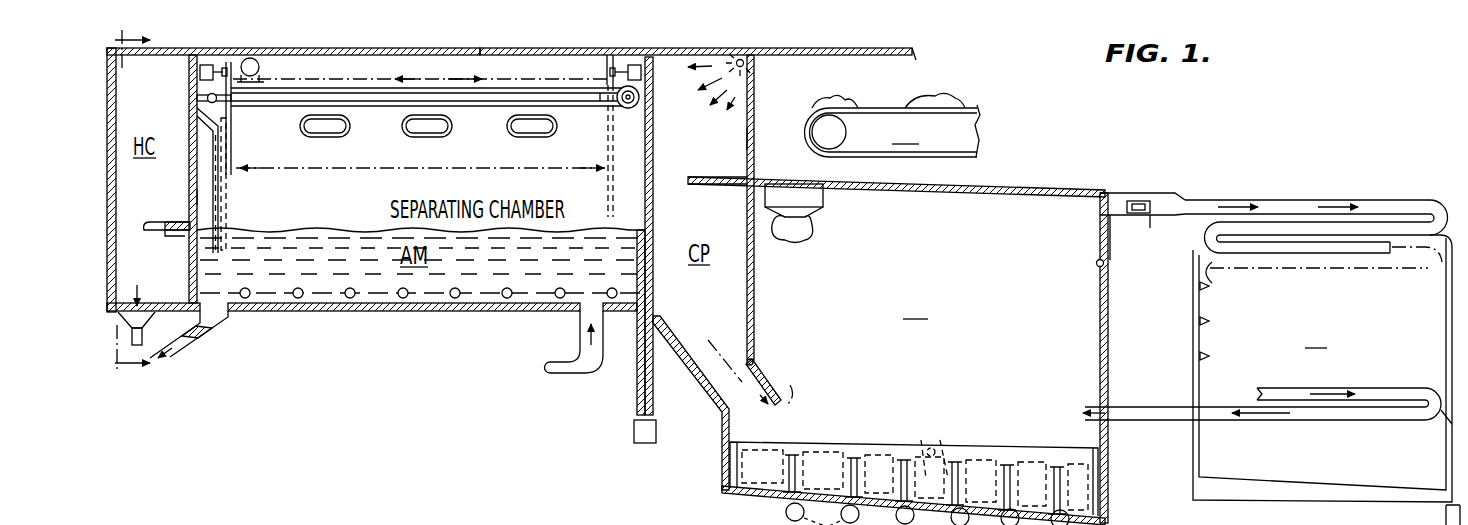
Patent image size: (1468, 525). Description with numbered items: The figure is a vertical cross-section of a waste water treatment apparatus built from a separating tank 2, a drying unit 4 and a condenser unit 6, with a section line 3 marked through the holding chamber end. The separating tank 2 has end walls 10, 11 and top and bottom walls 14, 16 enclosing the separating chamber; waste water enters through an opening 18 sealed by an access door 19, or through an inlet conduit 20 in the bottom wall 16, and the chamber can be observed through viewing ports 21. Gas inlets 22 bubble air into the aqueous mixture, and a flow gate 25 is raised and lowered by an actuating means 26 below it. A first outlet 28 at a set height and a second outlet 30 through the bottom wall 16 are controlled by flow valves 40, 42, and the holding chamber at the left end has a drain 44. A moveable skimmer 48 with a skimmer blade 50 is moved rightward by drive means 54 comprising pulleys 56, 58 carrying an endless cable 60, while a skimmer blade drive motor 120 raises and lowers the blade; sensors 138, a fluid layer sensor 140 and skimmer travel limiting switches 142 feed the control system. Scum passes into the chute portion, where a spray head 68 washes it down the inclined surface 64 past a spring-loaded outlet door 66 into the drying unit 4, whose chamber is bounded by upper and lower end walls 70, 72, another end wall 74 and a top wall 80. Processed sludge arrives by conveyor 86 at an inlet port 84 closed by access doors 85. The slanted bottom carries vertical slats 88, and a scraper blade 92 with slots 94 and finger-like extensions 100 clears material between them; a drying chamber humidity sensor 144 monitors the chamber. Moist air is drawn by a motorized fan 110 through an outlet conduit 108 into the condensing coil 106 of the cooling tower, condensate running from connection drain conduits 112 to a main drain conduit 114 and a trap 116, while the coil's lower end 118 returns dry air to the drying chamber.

The separating tank 2 is at (511, 188).
The section line 3- 3 is at (132, 203).
The drying unit 4 is at (919, 330).
The condenser unit 6 is at (1271, 331).
The end wall 10 is at (189, 133).
The end wall 11 is at (748, 140).
The top wall 14 is at (620, 52).
The bottom wall 16 is at (467, 312).
The opening 18 is at (560, 50).
The access door 19 is at (412, 49).
The inlet conduit 20 is at (572, 365).
The viewing ports 21 is at (350, 130).
The gas inlets 22 is at (350, 298).
The flow gate 25 is at (653, 142).
The actuating means 26 is at (645, 445).
The first outlet 28 is at (149, 222).
The second outlet 30 is at (213, 325).
The flow valve 40 is at (170, 236).
The flow valve 42 is at (198, 343).
The drain 44 is at (142, 335).
The skimmer 48 is at (258, 172).
The skimmer blade 50 is at (222, 125).
The drive means 54 is at (297, 83).
The pulley 56 is at (197, 98).
The pulley 58 is at (652, 108).
The endless cable 60 is at (588, 106).
The inclined surface 64 is at (670, 338).
The outlet door 66 is at (778, 390).
The spray head 68 is at (745, 56).
The upper end wall 70 is at (754, 275).
The lower end wall 72 is at (722, 437).
The end wall 74 is at (1108, 333).
The top wall 80 is at (1022, 188).
The inlet port 84 is at (812, 180).
The access doors 85 is at (794, 225).
The conveyor 86 is at (876, 110).
The vertical slats 88 is at (1050, 478).
The scraper blade 92 is at (969, 402).
The slots 94 is at (832, 460).
The finger-like extensions 100 is at (968, 470).
The condensing coil 106 is at (1425, 200).
The outlet conduit 108 is at (1157, 228).
The motorized fan 110 is at (1137, 200).
The connection drain conduit 112 is at (1198, 286).
The main drain conduit 114 is at (1198, 372).
The trap 116 is at (1432, 515).
The lower end 118 is at (1160, 422).
The skimmer blade drive motor 120 is at (256, 58).
The sensors 138 is at (197, 85).
The fluid layer sensor 140 is at (197, 198).
The skimmer travel limiting switches 142 is at (205, 65).
The drying chamber humidity sensor 144 is at (1097, 264).